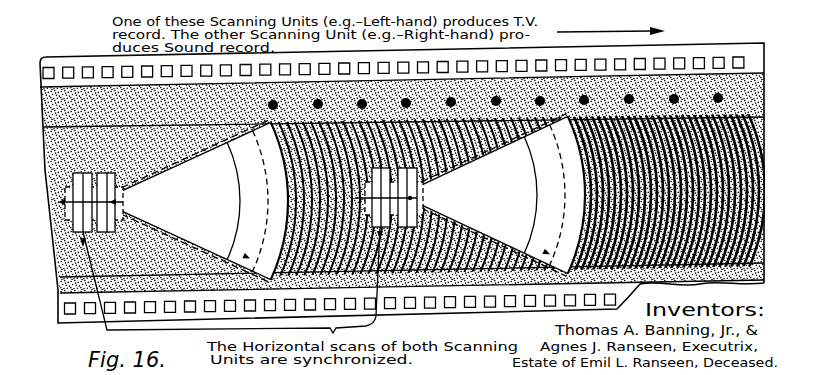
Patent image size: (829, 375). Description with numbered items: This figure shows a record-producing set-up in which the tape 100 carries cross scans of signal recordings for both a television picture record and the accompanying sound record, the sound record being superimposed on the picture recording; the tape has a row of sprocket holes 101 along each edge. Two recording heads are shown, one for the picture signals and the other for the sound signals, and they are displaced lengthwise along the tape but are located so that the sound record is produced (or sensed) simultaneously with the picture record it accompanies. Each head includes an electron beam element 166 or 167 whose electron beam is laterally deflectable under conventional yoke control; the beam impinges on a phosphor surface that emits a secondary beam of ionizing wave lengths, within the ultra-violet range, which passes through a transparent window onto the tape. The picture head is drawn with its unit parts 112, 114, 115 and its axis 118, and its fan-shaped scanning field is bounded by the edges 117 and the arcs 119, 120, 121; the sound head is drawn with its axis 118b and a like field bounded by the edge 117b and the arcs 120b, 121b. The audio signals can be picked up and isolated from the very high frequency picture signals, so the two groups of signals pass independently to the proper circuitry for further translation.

The record film strip 100 is at (46, 143).
The sprocket holes 101 is at (89, 313).
The scanning unit element 112 is at (83, 173).
The scanning unit element 114 is at (107, 173).
The scanning unit housing 115 is at (123, 187).
The scan sector edge 117 is at (191, 216).
The scan sector edge (sound unit) 117b is at (522, 230).
The left-hand scanning unit axis 118 is at (123, 202).
The right-hand scanning unit 118b is at (417, 198).
The intermediate scan arc 119 is at (265, 212).
The inner scan arc 120 is at (251, 207).
The inner scan arc (sound unit) 120b is at (545, 186).
The outer scan arc 121 is at (279, 200).
The outer scan arc (sound unit) 121b is at (576, 194).
The electron beam element 166 is at (219, 192).
The electron beam element 167 is at (523, 210).